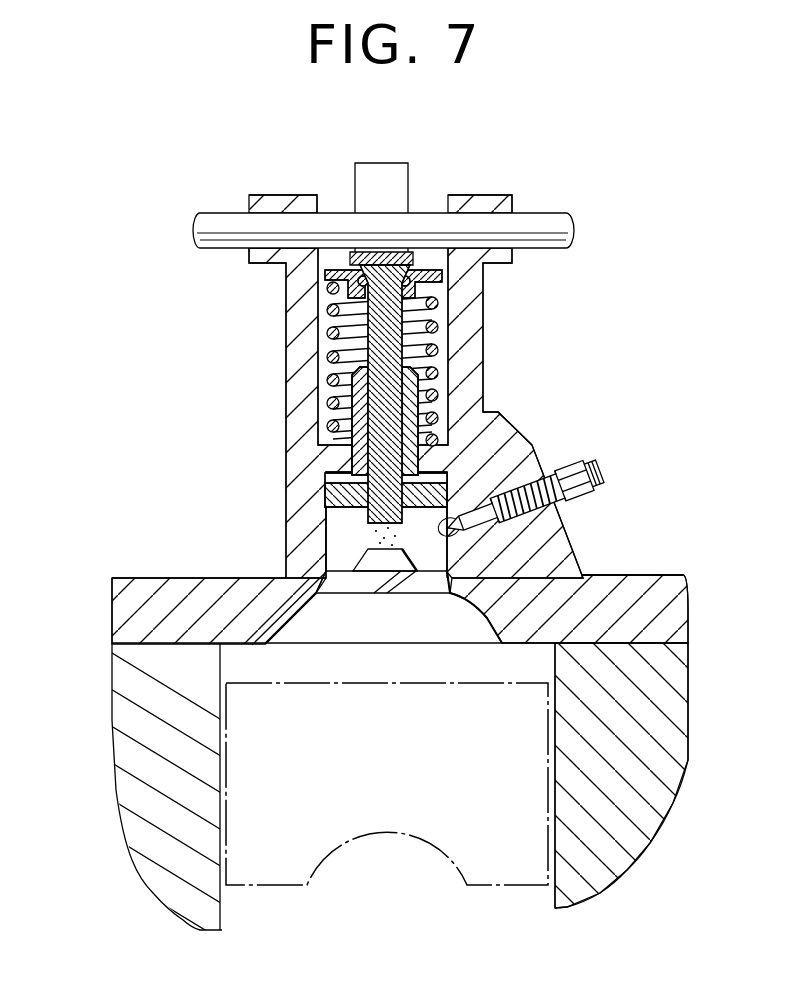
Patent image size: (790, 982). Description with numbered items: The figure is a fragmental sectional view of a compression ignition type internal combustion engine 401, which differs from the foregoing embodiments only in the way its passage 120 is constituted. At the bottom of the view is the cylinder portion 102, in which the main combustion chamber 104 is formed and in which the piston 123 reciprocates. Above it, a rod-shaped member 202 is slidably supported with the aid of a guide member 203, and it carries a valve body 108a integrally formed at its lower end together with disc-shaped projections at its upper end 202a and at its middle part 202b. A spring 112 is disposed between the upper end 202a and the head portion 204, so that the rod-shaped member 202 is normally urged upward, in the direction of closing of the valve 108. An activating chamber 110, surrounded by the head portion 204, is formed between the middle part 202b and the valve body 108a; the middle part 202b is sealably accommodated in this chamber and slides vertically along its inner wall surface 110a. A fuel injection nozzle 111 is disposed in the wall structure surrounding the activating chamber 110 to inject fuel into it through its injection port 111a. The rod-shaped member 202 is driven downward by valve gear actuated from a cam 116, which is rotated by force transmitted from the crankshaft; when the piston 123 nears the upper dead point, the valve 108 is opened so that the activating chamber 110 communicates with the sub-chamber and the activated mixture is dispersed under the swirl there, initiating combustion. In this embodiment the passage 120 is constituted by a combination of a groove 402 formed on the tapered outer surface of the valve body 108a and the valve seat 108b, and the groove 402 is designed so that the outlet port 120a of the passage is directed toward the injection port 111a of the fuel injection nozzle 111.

The cylinder portion 102 is at (130, 772).
The main combustion chamber 104 is at (336, 641).
The valve 108 is at (437, 596).
The valve body 108a is at (352, 588).
The valve seat 108b is at (468, 605).
The activating chamber 110 is at (330, 518).
The inner wall surface 110a is at (333, 547).
The fuel injection nozzle 111 is at (528, 482).
The injection port 111a is at (530, 460).
The spring 112 is at (435, 328).
The cam 116 is at (382, 172).
The passage 120 is at (386, 598).
The outlet port 120a is at (458, 531).
The piston 123 is at (523, 788).
The rod-shaped member 202 is at (375, 303).
The upper end 202a is at (440, 275).
The middle part 202b is at (337, 492).
The guide member 203 is at (360, 392).
The head portion 204 is at (295, 430).
The internal combustion engine 401 is at (311, 185).
The groove 402 is at (393, 587).